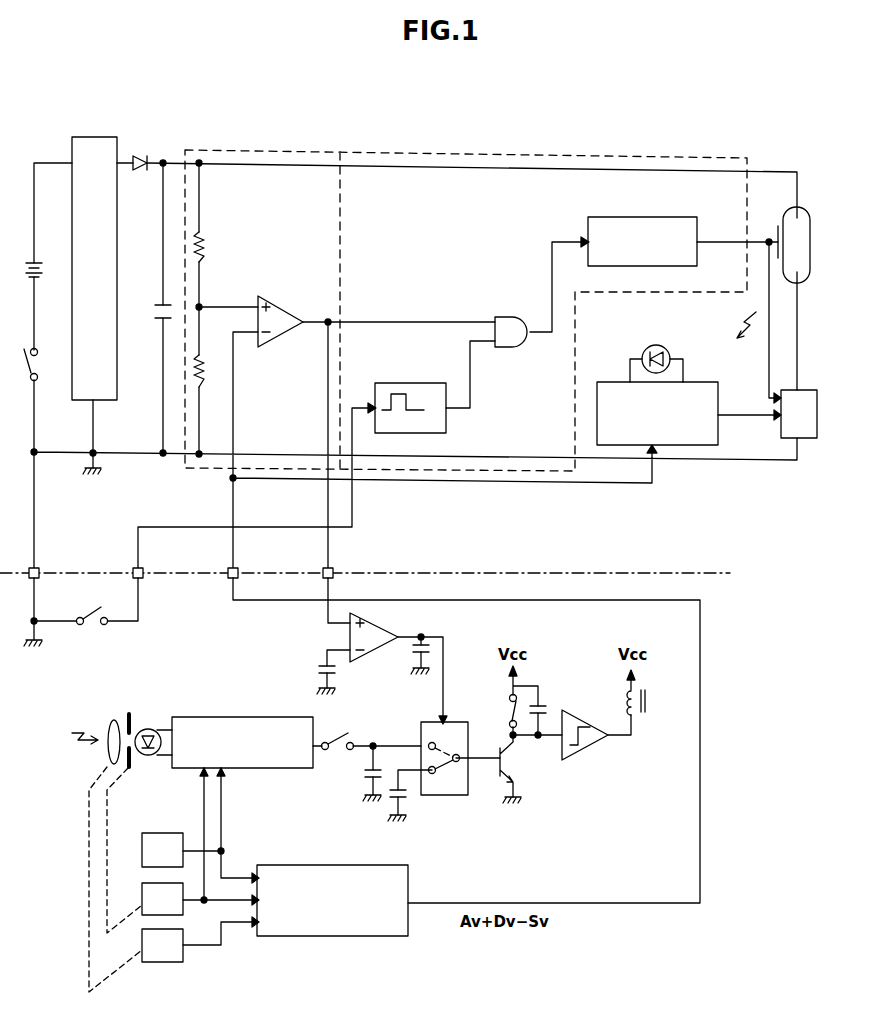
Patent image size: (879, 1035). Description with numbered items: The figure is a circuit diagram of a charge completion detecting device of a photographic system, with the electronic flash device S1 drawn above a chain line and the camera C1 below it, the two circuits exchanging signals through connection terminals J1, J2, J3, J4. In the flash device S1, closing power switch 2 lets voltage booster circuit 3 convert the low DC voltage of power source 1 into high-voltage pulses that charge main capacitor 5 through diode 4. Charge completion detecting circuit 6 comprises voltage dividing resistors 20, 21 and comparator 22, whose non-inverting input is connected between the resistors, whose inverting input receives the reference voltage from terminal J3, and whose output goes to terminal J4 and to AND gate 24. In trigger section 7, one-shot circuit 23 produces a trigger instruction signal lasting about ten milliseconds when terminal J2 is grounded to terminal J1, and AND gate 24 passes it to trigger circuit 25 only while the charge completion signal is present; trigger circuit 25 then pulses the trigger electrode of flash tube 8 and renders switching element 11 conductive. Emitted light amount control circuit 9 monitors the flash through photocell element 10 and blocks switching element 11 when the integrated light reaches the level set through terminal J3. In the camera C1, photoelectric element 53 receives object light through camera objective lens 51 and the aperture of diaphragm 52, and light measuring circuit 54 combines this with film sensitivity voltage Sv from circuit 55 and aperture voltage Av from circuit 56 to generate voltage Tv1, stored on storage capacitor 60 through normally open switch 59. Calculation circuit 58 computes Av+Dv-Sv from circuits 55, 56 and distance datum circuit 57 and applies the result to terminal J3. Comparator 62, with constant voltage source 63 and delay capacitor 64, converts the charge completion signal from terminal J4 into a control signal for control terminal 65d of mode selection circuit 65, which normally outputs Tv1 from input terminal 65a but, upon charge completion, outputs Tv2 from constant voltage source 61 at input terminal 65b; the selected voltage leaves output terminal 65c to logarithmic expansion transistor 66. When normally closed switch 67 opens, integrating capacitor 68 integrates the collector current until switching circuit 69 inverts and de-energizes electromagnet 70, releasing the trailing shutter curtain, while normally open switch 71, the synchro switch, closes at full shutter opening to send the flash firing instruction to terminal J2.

The power source 1 is at (28, 272).
The power switch 2 is at (24, 380).
The voltage booster circuit 3 is at (117, 390).
The diode 4 is at (143, 159).
The main capacitor 5 is at (160, 305).
The charge completion detecting circuit 6 is at (247, 150).
The trigger section 7 is at (507, 156).
The flash tube 8 is at (812, 220).
The emitted light amount control circuit 9 is at (671, 415).
The photocell element 10 is at (644, 351).
The switching element 11 is at (815, 392).
The voltage dividing resistor 20 is at (205, 246).
The voltage dividing resistor 21 is at (204, 364).
The comparator 22 is at (283, 338).
The one-shot circuit 23 is at (428, 383).
The AND gate 24 is at (512, 348).
The trigger circuit 25 is at (622, 217).
The camera objective lens 51 is at (110, 722).
The diaphragm 52 is at (128, 712).
The photoelectric element 53 is at (154, 729).
The light measuring circuit 54 is at (212, 717).
The film sensitivity datum outputting circuit 55 is at (144, 833).
The diaphragm aperture value datum outputting circuit 56 is at (142, 882).
The camera-to-object distance datum outputting circuit 57 is at (156, 963).
The calculation circuit 58 is at (360, 937).
The normally open switch 59 is at (338, 740).
The storage capacitor 60 is at (368, 776).
The constant voltage source 61 is at (399, 800).
The comparator 62 is at (378, 631).
The constant voltage source 63 is at (322, 662).
The capacitor 64 is at (414, 655).
The mode selection circuit 65 is at (451, 796).
The input terminal 65a is at (438, 743).
The input terminal 65b is at (438, 777).
The output terminal 65c is at (474, 768).
The control terminal 65d is at (462, 711).
The logarithmic expansion transistor 66 is at (519, 760).
The normally closed switch 67 is at (510, 705).
The integrating capacitor 68 is at (547, 706).
The switching circuit 69 is at (585, 761).
The electromagnet 70 is at (646, 704).
The normally open switch 71 is at (95, 626).
The ground terminal J1 is at (38, 569).
The connection terminal J2 is at (142, 569).
The connection terminal J3 is at (237, 569).
The connection terminal J4 is at (332, 569).
The electronic flash device S1 is at (758, 506).
The camera C1 is at (595, 960).